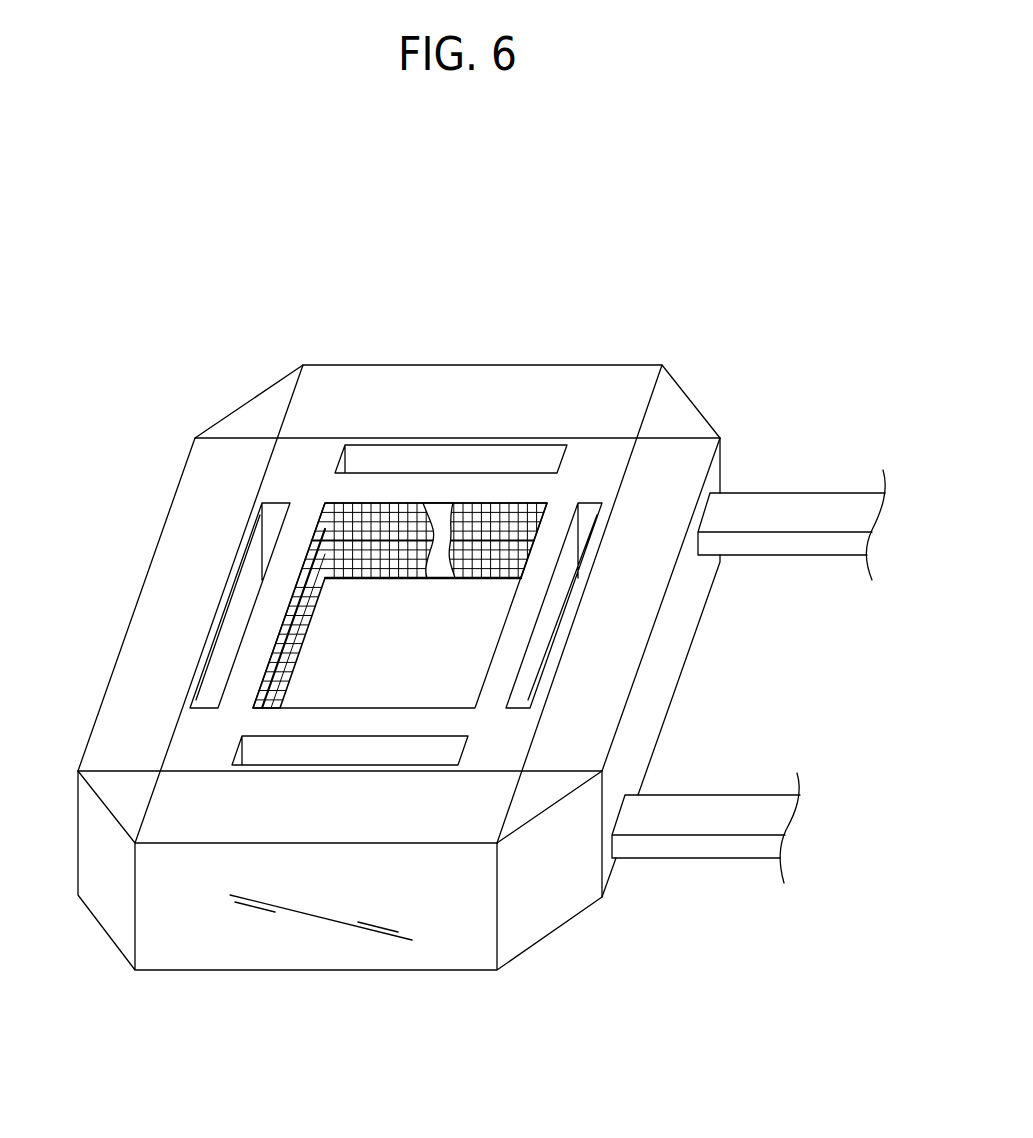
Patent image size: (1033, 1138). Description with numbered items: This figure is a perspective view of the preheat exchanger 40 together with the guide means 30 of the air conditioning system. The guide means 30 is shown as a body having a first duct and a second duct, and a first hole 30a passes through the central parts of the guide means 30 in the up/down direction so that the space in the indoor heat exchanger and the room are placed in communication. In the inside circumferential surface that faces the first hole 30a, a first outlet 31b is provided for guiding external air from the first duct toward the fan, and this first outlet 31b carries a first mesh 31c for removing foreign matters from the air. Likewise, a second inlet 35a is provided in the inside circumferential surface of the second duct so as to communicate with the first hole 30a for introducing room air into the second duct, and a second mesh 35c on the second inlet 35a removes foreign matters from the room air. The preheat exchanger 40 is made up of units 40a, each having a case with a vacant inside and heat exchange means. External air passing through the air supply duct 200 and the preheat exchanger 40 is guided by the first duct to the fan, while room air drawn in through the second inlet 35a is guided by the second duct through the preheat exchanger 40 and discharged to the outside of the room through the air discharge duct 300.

The guide means 30 is at (370, 493).
The first hole 30a is at (452, 680).
The first outlet 31b is at (440, 515).
The first mesh 31c is at (370, 521).
The second inlet 35a is at (438, 568).
The second mesh 35c is at (357, 558).
The preheat exchanger 40 is at (399, 620).
The unit of preheat exchanger 40a is at (473, 378).
The air supply duct 200 is at (728, 805).
The air discharge duct 300 is at (798, 503).